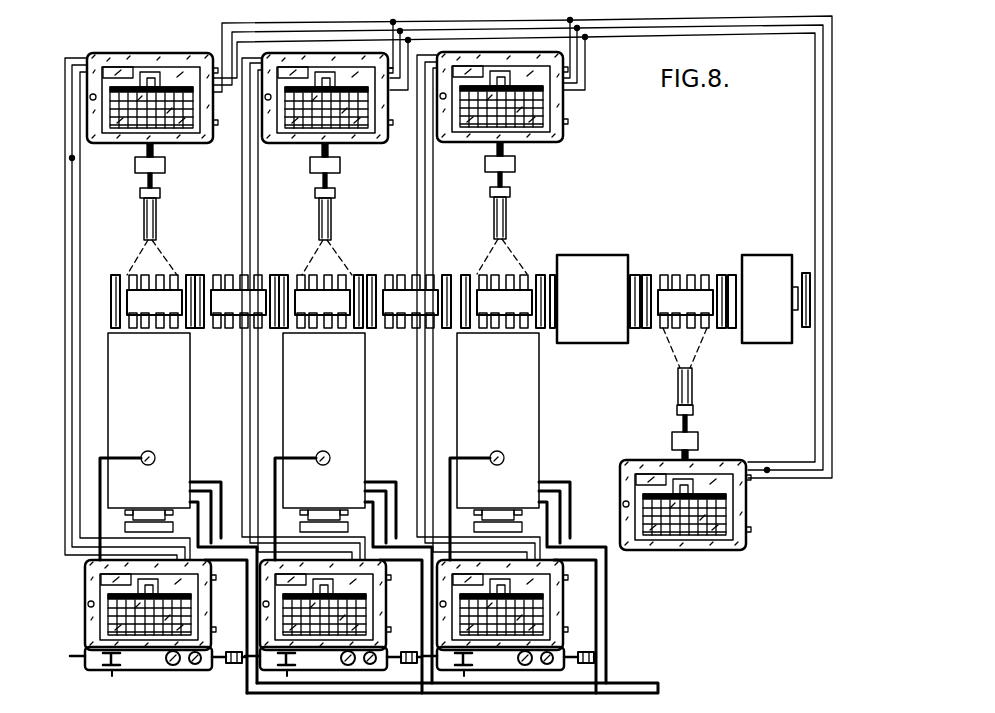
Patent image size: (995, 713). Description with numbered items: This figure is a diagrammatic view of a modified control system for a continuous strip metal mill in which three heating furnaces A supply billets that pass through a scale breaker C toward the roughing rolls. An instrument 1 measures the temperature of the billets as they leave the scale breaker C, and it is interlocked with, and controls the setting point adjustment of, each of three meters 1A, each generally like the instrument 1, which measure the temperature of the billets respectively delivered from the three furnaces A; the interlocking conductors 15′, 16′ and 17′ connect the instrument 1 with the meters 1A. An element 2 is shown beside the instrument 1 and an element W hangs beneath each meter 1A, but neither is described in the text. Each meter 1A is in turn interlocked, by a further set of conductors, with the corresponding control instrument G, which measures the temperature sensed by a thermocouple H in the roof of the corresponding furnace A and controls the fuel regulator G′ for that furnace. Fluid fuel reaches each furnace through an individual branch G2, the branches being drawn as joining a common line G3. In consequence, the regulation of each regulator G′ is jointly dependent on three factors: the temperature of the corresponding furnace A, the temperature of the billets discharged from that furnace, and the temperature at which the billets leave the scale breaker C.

The meter 1A is at (216, 122).
The weight W is at (165, 165).
The interlocking conductor 15′ is at (832, 192).
The interlocking conductor 16′ is at (823, 159).
The interlocking conductor 17′ is at (815, 128).
The instrument 1 is at (72, 158).
The receptacle lead 2 is at (108, 143).
The heating furnace A is at (323, 432).
The thermocouple H is at (150, 465).
The scale breaker C is at (592, 299).
The control instrument G is at (90, 628).
The fuel regulator G′ is at (240, 665).
The individual branch G2 is at (247, 575).
The gas main pipe G3 is at (640, 686).